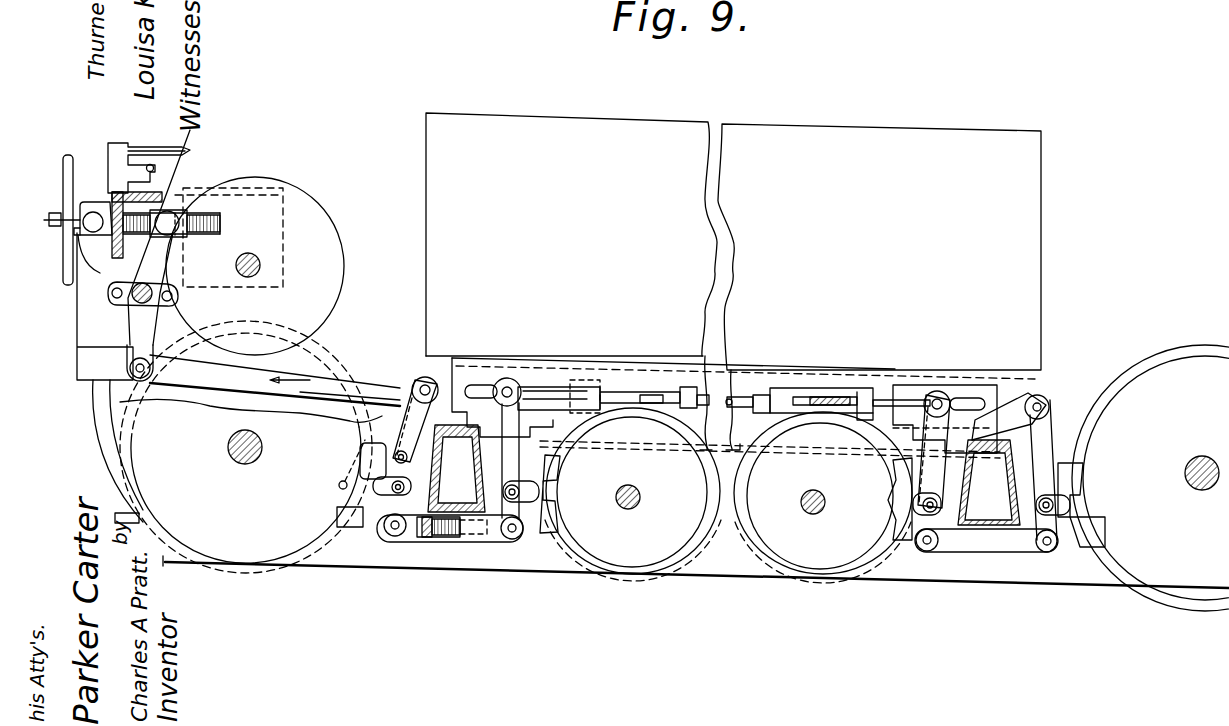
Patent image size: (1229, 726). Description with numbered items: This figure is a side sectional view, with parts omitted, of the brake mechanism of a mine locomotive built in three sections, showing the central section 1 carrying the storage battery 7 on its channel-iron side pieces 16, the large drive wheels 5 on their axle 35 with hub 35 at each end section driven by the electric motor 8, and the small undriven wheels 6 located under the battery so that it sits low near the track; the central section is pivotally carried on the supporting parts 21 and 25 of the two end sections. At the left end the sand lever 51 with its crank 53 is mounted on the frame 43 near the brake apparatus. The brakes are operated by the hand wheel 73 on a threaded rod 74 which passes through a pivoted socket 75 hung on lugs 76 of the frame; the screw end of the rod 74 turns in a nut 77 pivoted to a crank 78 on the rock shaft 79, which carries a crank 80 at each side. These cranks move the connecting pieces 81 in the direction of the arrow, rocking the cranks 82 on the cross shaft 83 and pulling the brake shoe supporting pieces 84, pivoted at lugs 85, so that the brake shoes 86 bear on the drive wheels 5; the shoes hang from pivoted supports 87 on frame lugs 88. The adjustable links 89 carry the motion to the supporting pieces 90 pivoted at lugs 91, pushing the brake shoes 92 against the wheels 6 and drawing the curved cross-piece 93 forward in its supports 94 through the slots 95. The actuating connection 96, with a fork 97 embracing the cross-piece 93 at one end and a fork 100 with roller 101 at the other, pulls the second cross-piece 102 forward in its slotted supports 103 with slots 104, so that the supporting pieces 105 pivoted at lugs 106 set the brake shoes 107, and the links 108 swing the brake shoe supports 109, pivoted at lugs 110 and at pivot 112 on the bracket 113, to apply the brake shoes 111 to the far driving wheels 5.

The central section 1 is at (720, 403).
The drive wheels 5 is at (185, 400).
The small wheels 6 is at (728, 495).
The storage battery 7 is at (733, 241).
The electric motor 8 is at (340, 267).
The side pieces 16 is at (698, 420).
The supporting part 21 is at (478, 470).
The supporting part 25 is at (989, 482).
The axle 35 is at (252, 458).
The frame 43 is at (87, 308).
The lever 51 is at (188, 140).
The crank 53 is at (135, 188).
The hand wheel 73 is at (67, 155).
The threaded rod 74 is at (220, 222).
The pivoted socket 75 is at (94, 260).
The lugs 76 is at (80, 204).
The nut 77 is at (172, 210).
The crank 78 is at (164, 257).
The rock shaft 79 is at (137, 301).
The crank 80 is at (246, 438).
The connecting pieces 81 is at (223, 378).
The cranks 82 is at (415, 386).
The cross shaft 83 is at (340, 489).
The brake shoe supporting pieces 84 is at (430, 537).
The lugs 85 is at (385, 536).
The brake shoes 86 is at (340, 522).
The pivoted supports 87 is at (380, 452).
The lugs 88 is at (430, 378).
The adjustable links 89 is at (490, 545).
The brake shoe supporting pieces 90 is at (515, 466).
The lugs 91 is at (530, 494).
The brake shoes 92 is at (542, 540).
The curved cross-piece 93 is at (615, 392).
The supports 94 is at (560, 388).
The slots 95 is at (480, 390).
The actuating connection 96 is at (742, 396).
The fork 97 is at (650, 392).
The fork 100 is at (795, 388).
The roller 101 is at (838, 397).
The cross-piece 102 is at (842, 388).
The supports 103 is at (955, 388).
The slots 104 is at (970, 398).
The brake-shoe supporting pieces 105 is at (935, 463).
The lugs 106 is at (913, 504).
The brake shoes 107 is at (893, 528).
The links 108 is at (985, 545).
The brake shoe supports 109 is at (1047, 447).
The lugs 110 is at (1055, 507).
The brake shoes 111 is at (1090, 532).
The pivot 112 is at (1045, 402).
The bracket 113 is at (1042, 395).